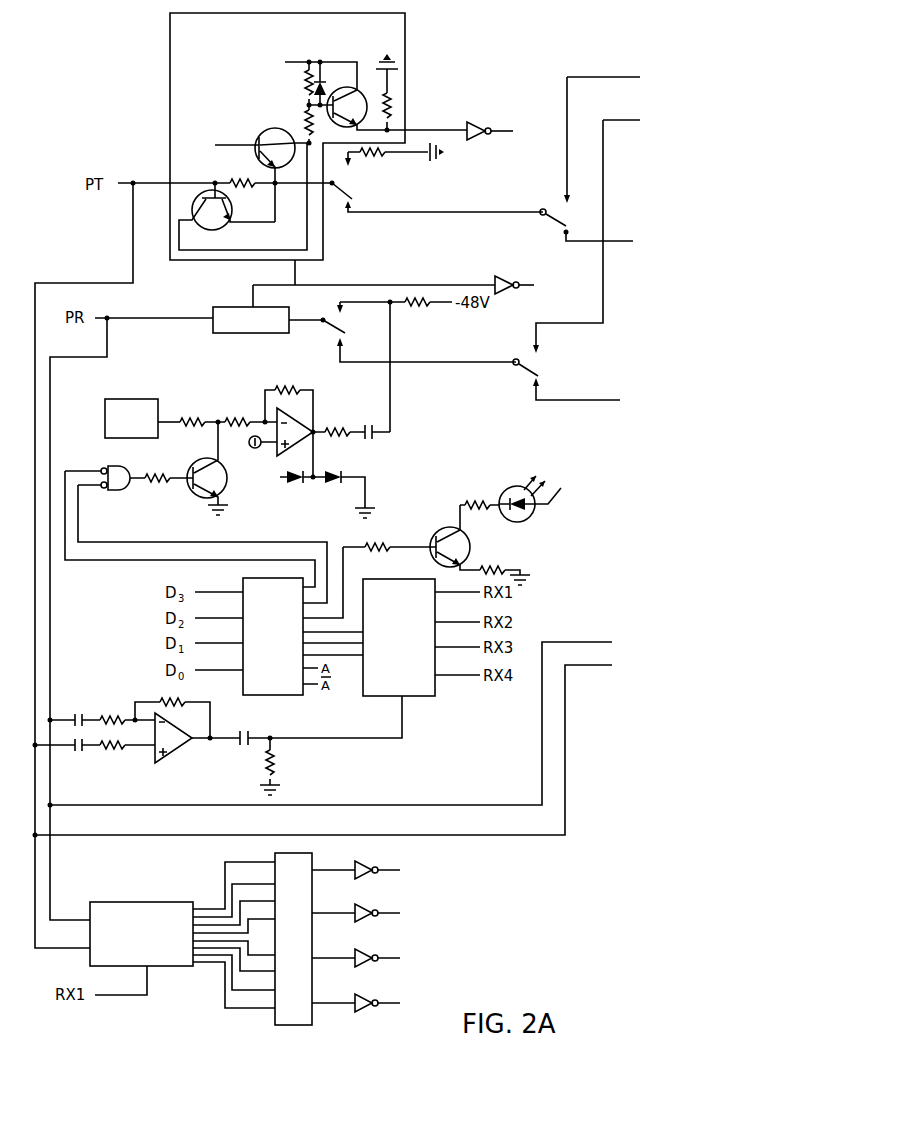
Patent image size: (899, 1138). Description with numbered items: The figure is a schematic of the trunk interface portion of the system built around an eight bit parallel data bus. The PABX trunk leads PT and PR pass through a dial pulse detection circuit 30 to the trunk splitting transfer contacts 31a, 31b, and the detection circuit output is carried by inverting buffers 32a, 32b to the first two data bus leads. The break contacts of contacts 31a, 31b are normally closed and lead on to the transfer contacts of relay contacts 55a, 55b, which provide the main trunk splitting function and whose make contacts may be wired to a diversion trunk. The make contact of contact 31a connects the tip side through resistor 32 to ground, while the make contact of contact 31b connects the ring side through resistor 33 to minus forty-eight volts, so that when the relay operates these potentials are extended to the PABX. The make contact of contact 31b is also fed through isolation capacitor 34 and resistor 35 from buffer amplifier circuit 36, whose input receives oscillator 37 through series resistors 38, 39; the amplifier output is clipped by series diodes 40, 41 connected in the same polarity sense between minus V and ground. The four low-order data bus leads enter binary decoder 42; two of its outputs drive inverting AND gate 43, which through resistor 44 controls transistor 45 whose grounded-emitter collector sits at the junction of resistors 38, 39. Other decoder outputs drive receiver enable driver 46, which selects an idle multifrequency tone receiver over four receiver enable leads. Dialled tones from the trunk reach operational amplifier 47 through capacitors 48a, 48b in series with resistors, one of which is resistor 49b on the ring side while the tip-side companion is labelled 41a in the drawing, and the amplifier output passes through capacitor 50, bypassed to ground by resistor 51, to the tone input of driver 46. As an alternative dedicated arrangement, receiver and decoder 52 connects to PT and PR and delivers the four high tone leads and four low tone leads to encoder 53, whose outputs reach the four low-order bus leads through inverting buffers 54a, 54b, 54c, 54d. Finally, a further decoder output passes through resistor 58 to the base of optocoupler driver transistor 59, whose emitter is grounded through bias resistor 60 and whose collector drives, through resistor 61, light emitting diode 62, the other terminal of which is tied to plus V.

The dial pulse detection circuit 30 is at (228, 307).
The trunk splitting transfer contact 31a is at (360, 195).
The trunk splitting transfer contact 31b is at (279, 321).
The resistor 32 is at (396, 157).
The inverting buffer 32a is at (476, 126).
The inverting buffer 32b is at (527, 272).
The resistor 33 is at (408, 306).
The isolation capacitor 34 is at (370, 436).
The resistor 35 is at (348, 418).
The buffer amplifier circuit 36 is at (291, 450).
The oscillator 37 is at (136, 399).
The series resistor 38 is at (190, 418).
The series resistor 39 is at (233, 418).
The diode 40 is at (300, 484).
The diode 41 is at (338, 484).
The resistor 41a is at (120, 714).
The binary decoder 42 is at (283, 696).
The inverting AND gate 43 is at (116, 491).
The resistor 44 is at (163, 474).
The transistor 45 is at (230, 492).
The receiver enable driver 46 is at (420, 697).
The operational amplifier 47 is at (160, 764).
The capacitor 48a is at (75, 714).
The capacitor 48b is at (82, 752).
The resistor 49b is at (123, 750).
The capacitor 50 is at (244, 746).
The resistor 51 is at (284, 770).
The receiver and decoder 52 is at (137, 902).
The encoder 53 is at (300, 1026).
The inverting buffer 54a is at (356, 862).
The inverting buffer 54b is at (356, 905).
The inverting buffer 54c is at (356, 950).
The inverting buffer 54d is at (356, 995).
The relay contact 55a is at (556, 220).
The relay contact 55b is at (540, 372).
The resistor 58 is at (387, 545).
The optocoupler driver transistor 59 is at (440, 529).
The bias resistor 60 is at (500, 570).
The resistor 61 is at (490, 509).
The light emitting diode 62 is at (508, 491).